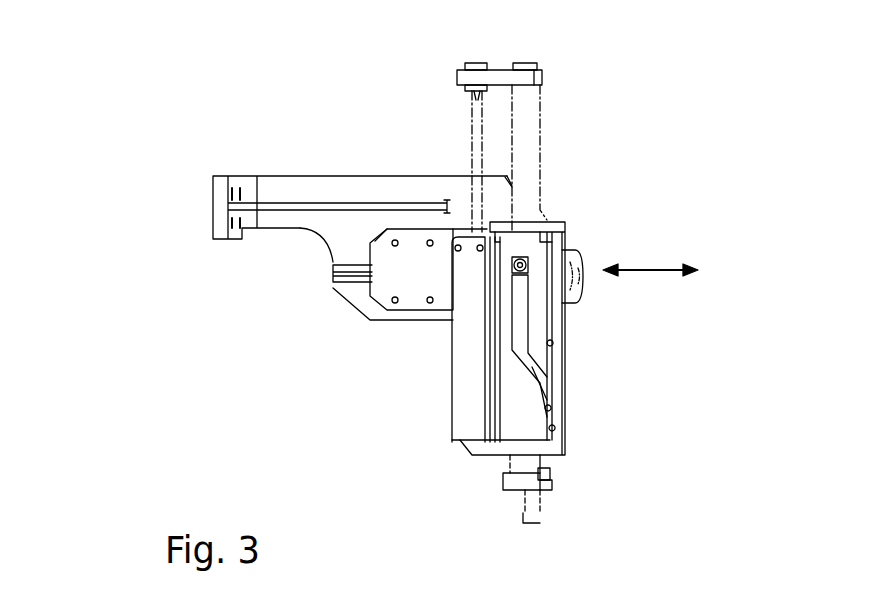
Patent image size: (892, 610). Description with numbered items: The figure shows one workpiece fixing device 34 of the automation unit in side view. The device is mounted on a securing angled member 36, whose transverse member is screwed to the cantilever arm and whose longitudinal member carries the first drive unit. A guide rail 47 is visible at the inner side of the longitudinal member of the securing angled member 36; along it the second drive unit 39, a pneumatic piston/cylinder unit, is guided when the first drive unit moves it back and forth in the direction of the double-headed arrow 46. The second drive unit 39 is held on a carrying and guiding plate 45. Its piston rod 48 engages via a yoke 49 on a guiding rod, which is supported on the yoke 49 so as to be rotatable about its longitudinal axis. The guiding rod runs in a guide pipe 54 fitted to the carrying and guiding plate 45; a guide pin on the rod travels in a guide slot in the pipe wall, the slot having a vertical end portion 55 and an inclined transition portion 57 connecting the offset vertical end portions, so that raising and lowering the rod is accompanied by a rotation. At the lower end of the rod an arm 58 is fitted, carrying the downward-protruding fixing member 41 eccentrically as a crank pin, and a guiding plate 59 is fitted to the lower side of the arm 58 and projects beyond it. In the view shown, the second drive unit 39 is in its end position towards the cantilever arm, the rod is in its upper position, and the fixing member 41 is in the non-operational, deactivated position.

The workpiece fixing device 34 is at (318, 130).
The securing angled member 36 is at (200, 197).
The second drive unit 39 is at (442, 412).
The fixing member 41 is at (540, 517).
The carrying and guiding plate 45 is at (432, 285).
The double-headed arrow 46 is at (654, 262).
The guide rail 47 is at (330, 273).
The piston rod 48 is at (472, 140).
The yoke 49 is at (457, 74).
The guide pipe 54 is at (532, 425).
The end portion 55 is at (520, 320).
The transition portion 57 is at (535, 368).
The arm 58 is at (552, 477).
The guiding plate 59 is at (552, 482).